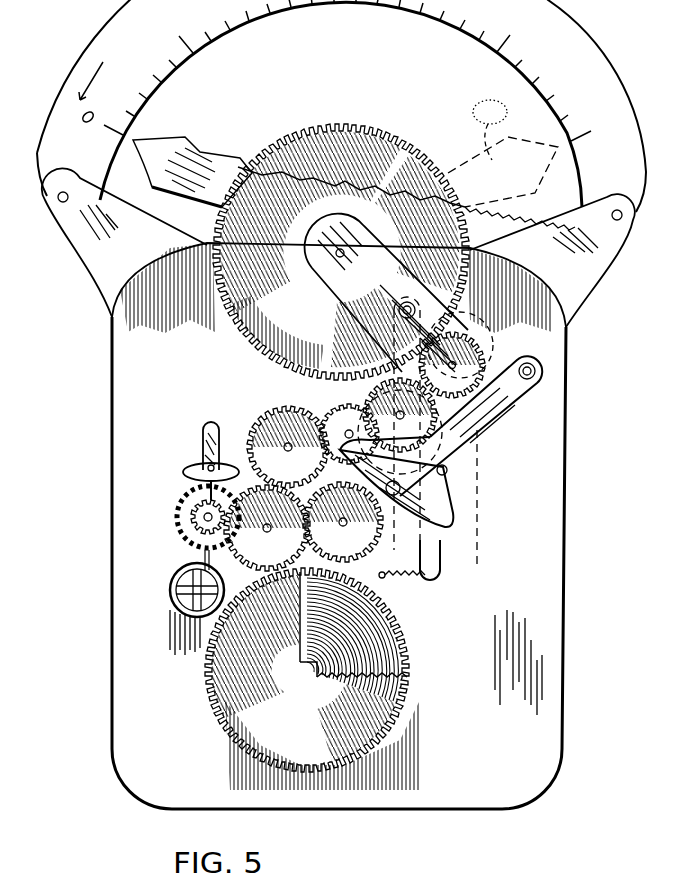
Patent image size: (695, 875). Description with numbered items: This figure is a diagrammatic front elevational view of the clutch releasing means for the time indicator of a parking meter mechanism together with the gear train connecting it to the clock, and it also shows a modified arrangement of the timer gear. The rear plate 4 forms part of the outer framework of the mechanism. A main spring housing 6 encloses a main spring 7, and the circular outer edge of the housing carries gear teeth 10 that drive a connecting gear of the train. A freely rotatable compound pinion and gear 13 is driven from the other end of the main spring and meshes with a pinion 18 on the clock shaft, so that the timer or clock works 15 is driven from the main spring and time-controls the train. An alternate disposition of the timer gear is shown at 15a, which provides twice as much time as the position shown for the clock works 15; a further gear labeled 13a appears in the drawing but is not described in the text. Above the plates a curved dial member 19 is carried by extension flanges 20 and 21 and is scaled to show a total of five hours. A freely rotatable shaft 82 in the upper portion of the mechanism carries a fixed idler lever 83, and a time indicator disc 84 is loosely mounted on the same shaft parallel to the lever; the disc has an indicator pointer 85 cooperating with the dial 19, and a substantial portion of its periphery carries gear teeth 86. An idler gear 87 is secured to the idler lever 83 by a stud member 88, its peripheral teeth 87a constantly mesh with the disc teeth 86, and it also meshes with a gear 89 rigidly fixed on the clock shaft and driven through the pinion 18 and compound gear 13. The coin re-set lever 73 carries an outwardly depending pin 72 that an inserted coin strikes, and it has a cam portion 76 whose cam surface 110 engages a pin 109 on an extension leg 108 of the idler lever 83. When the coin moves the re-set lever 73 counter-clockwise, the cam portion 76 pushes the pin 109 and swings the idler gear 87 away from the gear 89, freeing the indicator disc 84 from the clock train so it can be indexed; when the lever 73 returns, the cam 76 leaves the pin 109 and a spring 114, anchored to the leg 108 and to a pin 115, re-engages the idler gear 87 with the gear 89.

The rear plate 4 is at (552, 612).
The main spring housing 6 is at (222, 705).
The main spring 7 is at (365, 672).
The gear teeth 10 is at (405, 654).
The compound pinion and gear 13 is at (260, 422).
The gear 13a is at (284, 555).
The timer or clock works 15 is at (196, 553).
The timer gear 15a is at (365, 545).
The pinion 18 is at (320, 404).
The dial member 19 is at (583, 52).
The extension flange 20 is at (100, 258).
The extension flange 21 is at (605, 240).
The pin 72 is at (537, 371).
The coin re-set lever 73 is at (520, 390).
The cam portion 76 is at (445, 518).
The shaft 82 is at (336, 257).
The idler lever 83 is at (352, 233).
The time indicator disc 84 is at (388, 150).
The indicator pointer 85 is at (140, 146).
The gear teeth 86 is at (296, 135).
The idler gear 87 is at (462, 358).
The peripheral teeth 87a is at (468, 337).
The stud member 88 is at (467, 423).
The gear 89 is at (413, 442).
The extension leg 108 is at (445, 546).
The pin 109 is at (455, 468).
The cam surface 110 is at (448, 493).
The spring 114 is at (425, 580).
The pin 115 is at (386, 582).